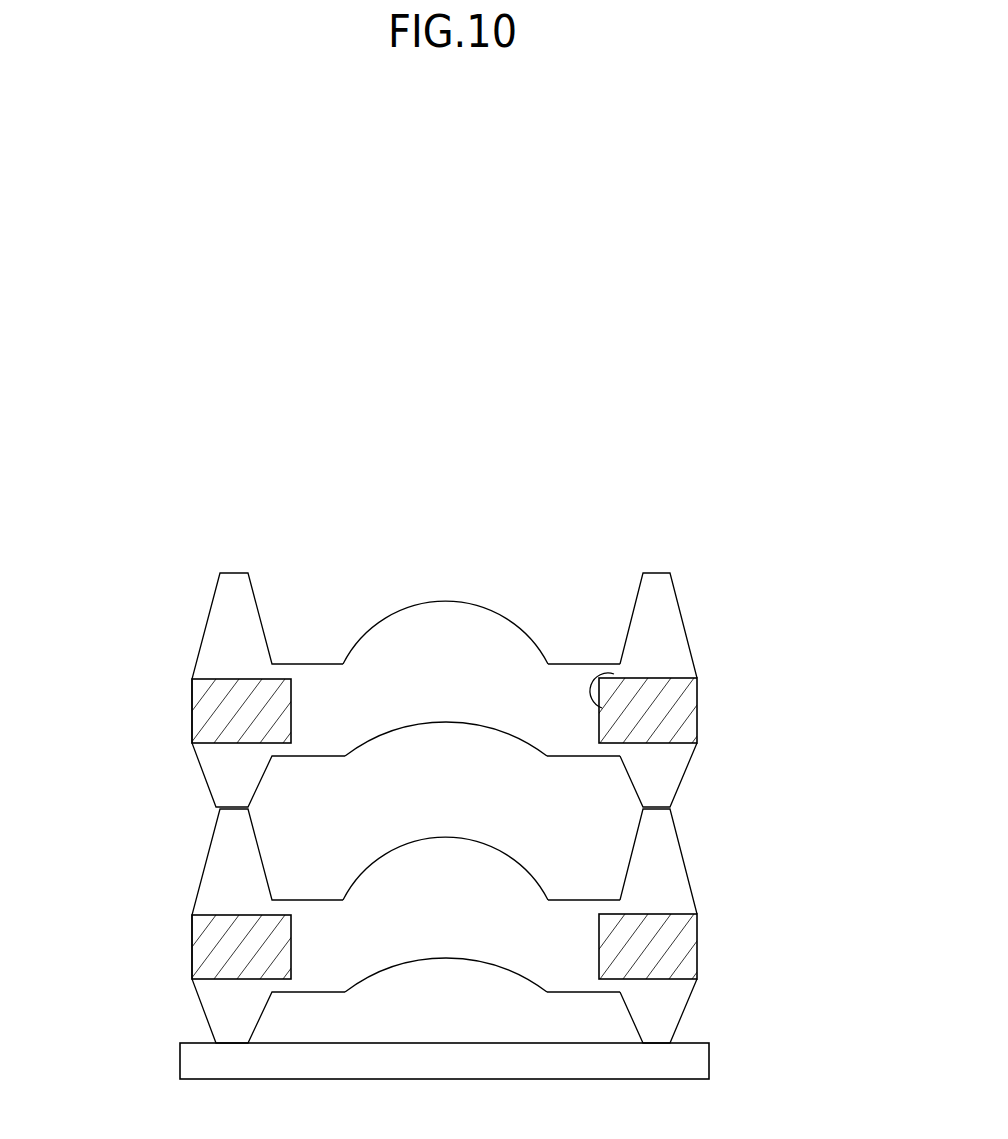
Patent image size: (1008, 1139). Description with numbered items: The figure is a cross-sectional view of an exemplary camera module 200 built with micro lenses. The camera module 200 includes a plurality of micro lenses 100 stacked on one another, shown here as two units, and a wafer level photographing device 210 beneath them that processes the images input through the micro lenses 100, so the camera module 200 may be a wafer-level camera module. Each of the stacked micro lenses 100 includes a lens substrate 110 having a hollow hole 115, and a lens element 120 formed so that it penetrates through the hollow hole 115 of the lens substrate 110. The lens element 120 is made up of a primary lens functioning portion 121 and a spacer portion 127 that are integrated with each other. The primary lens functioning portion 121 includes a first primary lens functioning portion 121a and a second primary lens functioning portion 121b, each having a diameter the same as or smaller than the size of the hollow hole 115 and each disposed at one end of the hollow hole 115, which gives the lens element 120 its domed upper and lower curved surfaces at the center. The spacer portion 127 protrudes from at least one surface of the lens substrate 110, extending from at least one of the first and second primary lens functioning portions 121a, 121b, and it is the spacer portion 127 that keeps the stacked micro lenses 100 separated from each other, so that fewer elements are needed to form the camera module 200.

The micro lens 100 is at (172, 713).
The lens substrate 110 is at (668, 717).
The hollow hole 115 is at (614, 674).
The lens element 120 is at (692, 412).
The primary lens functioning portion 121 is at (588, 465).
The first primary lens functioning portion 121a is at (442, 612).
The second primary lens functioning portion 121b is at (442, 710).
The spacer portion 127 is at (658, 590).
The camera module 200 is at (790, 500).
The wafer level photographing device 210 is at (693, 1066).